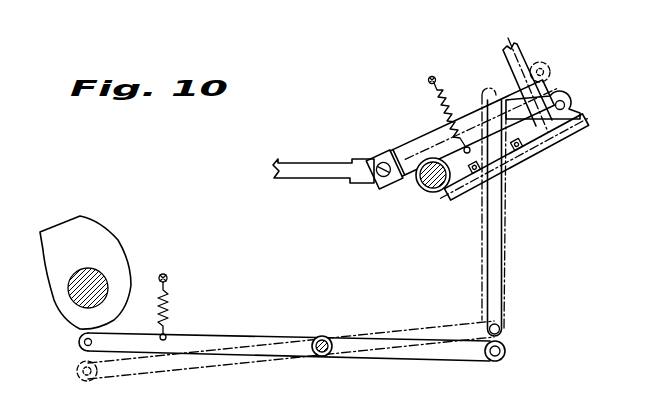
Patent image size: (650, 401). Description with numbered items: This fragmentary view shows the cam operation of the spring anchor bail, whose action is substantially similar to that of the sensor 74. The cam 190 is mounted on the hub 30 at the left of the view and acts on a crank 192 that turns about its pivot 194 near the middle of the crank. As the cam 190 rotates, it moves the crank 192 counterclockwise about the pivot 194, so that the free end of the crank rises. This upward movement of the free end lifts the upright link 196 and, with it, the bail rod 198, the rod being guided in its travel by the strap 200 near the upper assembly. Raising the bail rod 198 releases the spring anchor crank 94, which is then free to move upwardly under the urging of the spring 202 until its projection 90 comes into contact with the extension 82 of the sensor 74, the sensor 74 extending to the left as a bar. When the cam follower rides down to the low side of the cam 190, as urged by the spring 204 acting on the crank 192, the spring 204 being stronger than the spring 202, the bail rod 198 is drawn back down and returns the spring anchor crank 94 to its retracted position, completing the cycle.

The shaft 30 is at (72, 297).
The sensor 74 is at (315, 171).
The extension of sensor 82 is at (432, 142).
The projection 90 is at (533, 137).
The spring anchor crank 94 is at (460, 187).
The cam 190 is at (92, 242).
The crank 192 is at (213, 339).
The pivot 194 is at (326, 336).
The link 196 is at (501, 212).
The bail rod 198 is at (504, 88).
The strap 200 is at (513, 145).
The spring 202 is at (433, 94).
The spring 204 is at (170, 297).